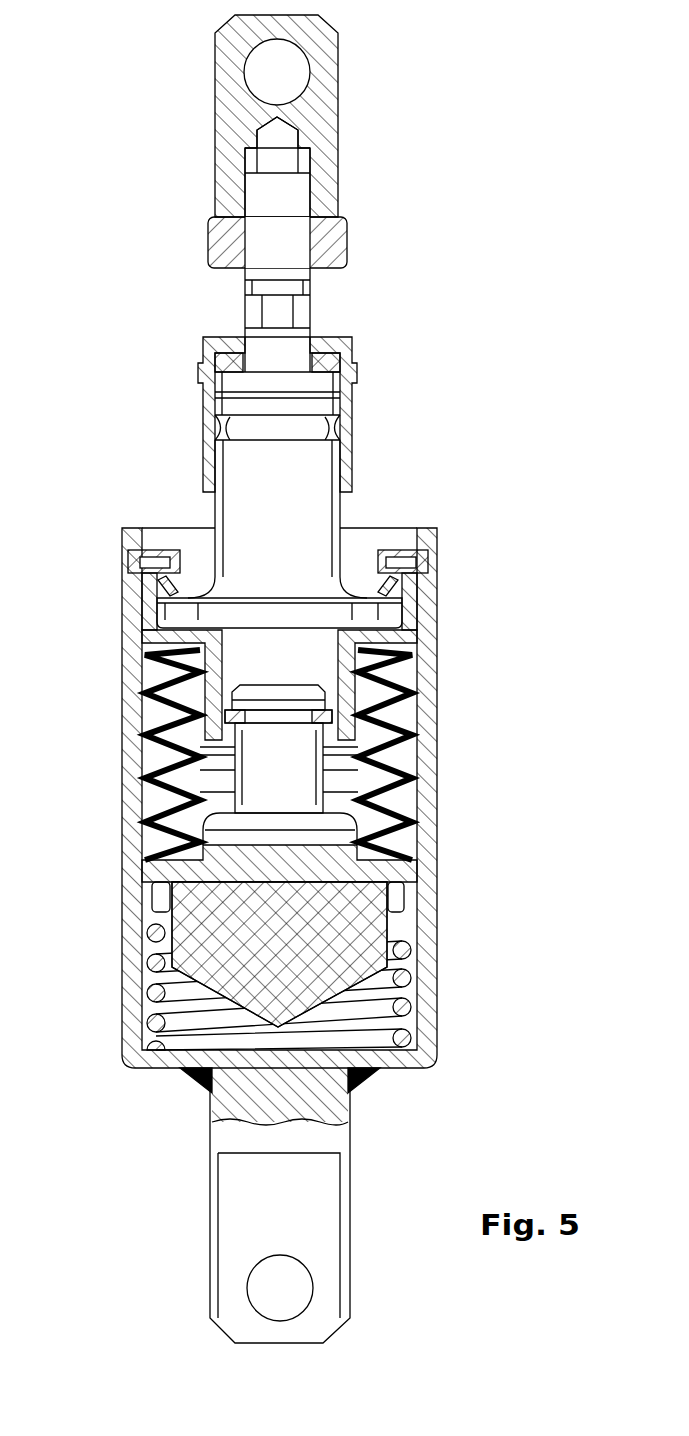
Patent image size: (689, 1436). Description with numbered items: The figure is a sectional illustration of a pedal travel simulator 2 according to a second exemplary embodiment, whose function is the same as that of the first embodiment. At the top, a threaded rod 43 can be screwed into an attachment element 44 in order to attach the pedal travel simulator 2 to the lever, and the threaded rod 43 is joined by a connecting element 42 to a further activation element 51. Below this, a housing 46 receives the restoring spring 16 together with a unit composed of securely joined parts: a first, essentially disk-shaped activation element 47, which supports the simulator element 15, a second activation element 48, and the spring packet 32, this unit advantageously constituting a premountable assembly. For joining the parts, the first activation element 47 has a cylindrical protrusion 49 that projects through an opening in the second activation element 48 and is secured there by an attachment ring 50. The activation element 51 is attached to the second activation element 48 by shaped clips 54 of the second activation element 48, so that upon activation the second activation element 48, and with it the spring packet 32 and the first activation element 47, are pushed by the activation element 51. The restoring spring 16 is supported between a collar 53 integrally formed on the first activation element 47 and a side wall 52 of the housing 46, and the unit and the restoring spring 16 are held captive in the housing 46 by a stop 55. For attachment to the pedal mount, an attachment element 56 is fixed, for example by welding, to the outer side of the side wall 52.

The pedal travel simulator 2 is at (118, 218).
The attachment element 44 is at (305, 107).
The threaded rod 43 is at (288, 245).
The connecting element 42 is at (348, 408).
The activation element 51 is at (245, 507).
The stop 55 is at (410, 562).
The shaped clips 54 is at (160, 595).
The second activation element 48 is at (405, 611).
The attachment ring 50 is at (143, 718).
The housing 46 is at (423, 712).
The cylindrical protrusion 49 is at (258, 768).
The spring packet 32 is at (405, 800).
The first activation element 47 is at (163, 872).
The simulator element 15 is at (345, 900).
The collar 53 is at (165, 913).
The restoring spring 16 is at (410, 978).
The side wall 52 is at (307, 1057).
The attachment element 56 is at (232, 1137).